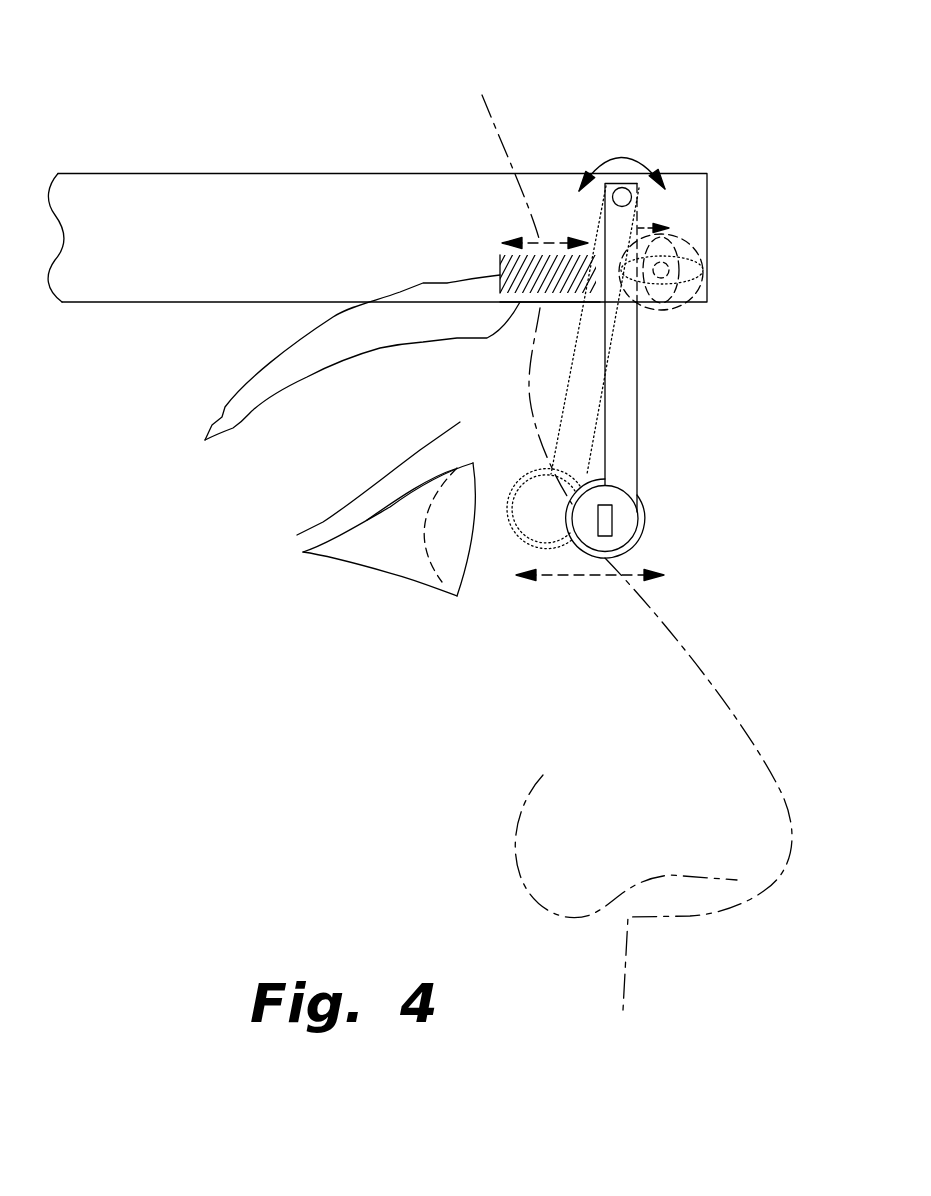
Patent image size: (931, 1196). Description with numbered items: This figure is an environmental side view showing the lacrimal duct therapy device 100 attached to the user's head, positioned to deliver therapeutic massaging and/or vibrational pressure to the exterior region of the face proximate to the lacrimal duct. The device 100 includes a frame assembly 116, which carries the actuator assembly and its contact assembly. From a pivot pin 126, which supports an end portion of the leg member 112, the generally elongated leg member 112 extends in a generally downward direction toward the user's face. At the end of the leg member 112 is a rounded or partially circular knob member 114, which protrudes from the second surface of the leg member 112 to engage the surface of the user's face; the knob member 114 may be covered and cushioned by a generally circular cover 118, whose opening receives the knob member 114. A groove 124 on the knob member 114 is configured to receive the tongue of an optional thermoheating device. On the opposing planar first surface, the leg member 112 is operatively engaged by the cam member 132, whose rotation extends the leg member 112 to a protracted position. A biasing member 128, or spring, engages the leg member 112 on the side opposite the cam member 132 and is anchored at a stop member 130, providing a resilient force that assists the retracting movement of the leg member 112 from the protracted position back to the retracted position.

The lacrimal duct therapy device 100 is at (567, 93).
The leg member 112 is at (638, 392).
The knob member 114 is at (588, 523).
The frame assembly 116 is at (331, 153).
The cover 118 is at (646, 516).
The groove 124 is at (612, 506).
The pivot pin 126 is at (628, 205).
The biasing member 128 is at (552, 305).
The stop member 130 is at (502, 264).
The cam member 132 is at (664, 250).